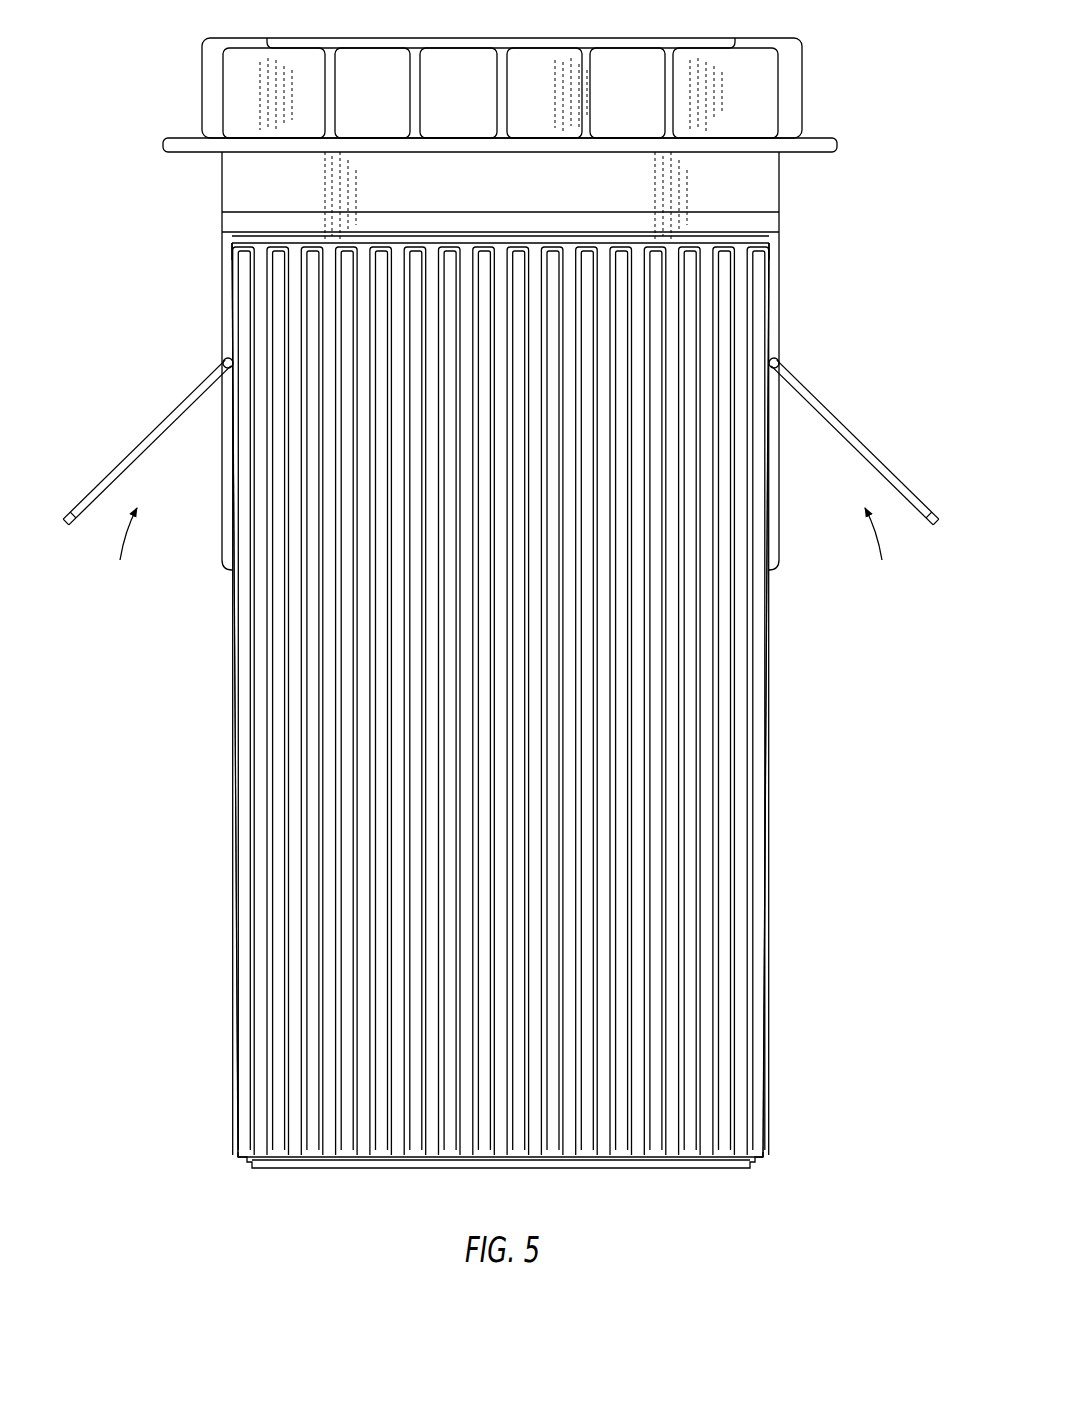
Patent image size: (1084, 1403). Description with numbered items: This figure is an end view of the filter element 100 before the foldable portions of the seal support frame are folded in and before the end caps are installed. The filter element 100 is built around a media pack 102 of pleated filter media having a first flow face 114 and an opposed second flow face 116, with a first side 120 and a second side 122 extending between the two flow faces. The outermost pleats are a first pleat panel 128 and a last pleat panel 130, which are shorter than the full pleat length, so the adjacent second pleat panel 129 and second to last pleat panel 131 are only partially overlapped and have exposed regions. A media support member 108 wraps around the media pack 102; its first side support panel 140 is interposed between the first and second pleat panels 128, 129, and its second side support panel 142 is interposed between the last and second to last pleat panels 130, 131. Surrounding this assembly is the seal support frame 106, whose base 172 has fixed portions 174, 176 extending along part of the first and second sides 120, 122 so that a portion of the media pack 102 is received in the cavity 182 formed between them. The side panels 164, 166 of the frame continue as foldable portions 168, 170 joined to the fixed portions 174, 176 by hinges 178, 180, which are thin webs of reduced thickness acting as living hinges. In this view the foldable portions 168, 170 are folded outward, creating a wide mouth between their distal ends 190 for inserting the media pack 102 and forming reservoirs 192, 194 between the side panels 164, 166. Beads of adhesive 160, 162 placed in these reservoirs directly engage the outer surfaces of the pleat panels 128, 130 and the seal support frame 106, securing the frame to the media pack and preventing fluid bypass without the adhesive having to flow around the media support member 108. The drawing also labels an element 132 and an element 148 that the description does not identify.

The filter element 100 is at (170, 302).
The media pack 102 is at (300, 880).
The seal support frame 106 is at (755, 180).
The media support member 108 is at (762, 762).
The first flow face 114 is at (415, 243).
The second flow face 116 is at (605, 1162).
The first side 120 is at (240, 722).
The second side 122 is at (758, 682).
The first pleat panel 128 is at (230, 522).
The second pleat panel 129 is at (238, 630).
The last pleat panel 130 is at (772, 522).
The second to last pleat panel 131 is at (764, 630).
The frame corner 132 is at (232, 246).
The first side support panel 140 is at (240, 790).
The second side support panel 142 is at (762, 885).
The bottom edge 148 is at (398, 1162).
The bead of adhesive 160 is at (226, 410).
The bead of adhesive 162 is at (777, 410).
The side panel 164 is at (96, 481).
The side panel 166 is at (906, 481).
The foldable portion 168 is at (137, 445).
The foldable portion 170 is at (865, 445).
The base 172 is at (247, 180).
The fixed portion 174 is at (222, 282).
The fixed portion 176 is at (779, 292).
The hinge 178 is at (226, 360).
The hinge 180 is at (776, 360).
The cavity 182 is at (350, 325).
The distal end 190 is at (66, 527).
The reservoir 192 is at (120, 553).
The reservoir 194 is at (879, 553).